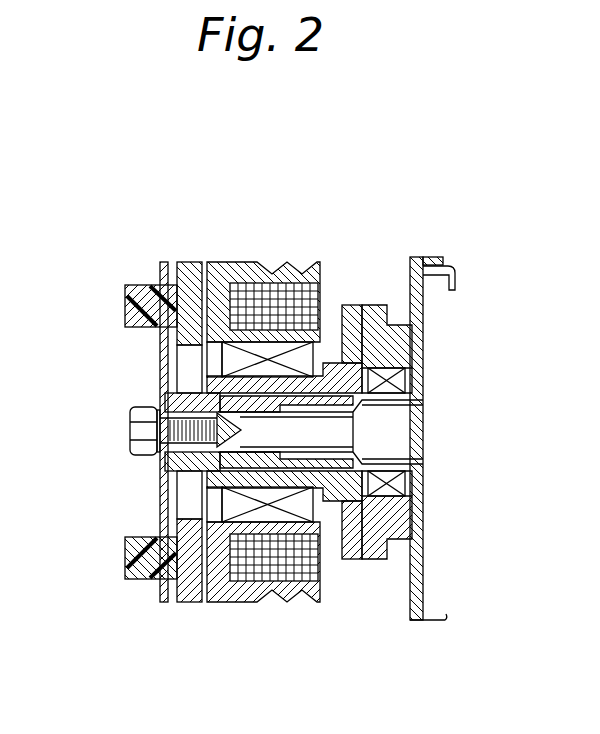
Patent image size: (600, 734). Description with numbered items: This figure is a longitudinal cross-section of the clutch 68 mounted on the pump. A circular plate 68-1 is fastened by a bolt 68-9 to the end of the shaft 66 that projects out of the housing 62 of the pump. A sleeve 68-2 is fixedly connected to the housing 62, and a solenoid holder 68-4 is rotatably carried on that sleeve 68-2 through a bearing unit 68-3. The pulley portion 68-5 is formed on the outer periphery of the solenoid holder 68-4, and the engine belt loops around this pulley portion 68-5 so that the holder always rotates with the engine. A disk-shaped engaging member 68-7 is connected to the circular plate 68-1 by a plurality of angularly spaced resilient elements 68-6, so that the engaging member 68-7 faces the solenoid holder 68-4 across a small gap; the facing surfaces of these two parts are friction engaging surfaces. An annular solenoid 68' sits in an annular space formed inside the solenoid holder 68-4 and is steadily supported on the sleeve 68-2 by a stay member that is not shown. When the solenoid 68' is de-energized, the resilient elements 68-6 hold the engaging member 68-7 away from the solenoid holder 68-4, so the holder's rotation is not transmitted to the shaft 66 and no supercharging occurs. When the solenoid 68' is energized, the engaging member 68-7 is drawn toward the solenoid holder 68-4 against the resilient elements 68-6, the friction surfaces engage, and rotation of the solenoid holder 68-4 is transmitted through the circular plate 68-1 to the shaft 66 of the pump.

The housing 62 is at (420, 257).
The shaft 66 is at (397, 418).
The clutch 68 is at (301, 244).
The annular solenoid 68' is at (273, 579).
The circular plate 68-1 is at (157, 360).
The sleeve 68-2 is at (323, 373).
The bearing unit 68-3 is at (305, 509).
The solenoid holder 68-4 is at (217, 262).
The pulley portion 68-5 is at (293, 262).
The resilient elements 68-6 is at (143, 580).
The engaging member 68-7 is at (178, 262).
The bolt 68-9 is at (132, 437).